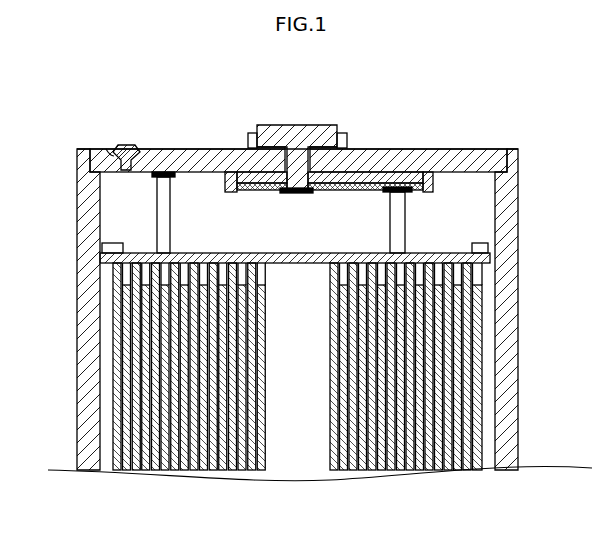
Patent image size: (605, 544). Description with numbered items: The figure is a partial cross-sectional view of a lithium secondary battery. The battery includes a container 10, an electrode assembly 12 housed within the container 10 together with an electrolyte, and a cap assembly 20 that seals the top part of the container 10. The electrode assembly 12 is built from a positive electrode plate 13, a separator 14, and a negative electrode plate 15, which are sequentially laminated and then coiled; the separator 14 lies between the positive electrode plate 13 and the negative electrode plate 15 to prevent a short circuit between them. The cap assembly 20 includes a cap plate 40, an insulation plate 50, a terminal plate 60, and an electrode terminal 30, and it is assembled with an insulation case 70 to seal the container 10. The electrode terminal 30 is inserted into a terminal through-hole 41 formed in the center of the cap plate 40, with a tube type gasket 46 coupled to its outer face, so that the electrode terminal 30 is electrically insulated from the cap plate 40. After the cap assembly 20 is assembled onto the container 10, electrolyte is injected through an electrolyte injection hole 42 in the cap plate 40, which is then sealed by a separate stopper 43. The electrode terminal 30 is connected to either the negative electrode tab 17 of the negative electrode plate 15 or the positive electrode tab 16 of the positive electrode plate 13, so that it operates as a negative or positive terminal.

The container 10 is at (512, 378).
The electrode assembly 12 is at (341, 393).
The positive electrode plate 13 is at (467, 470).
The separator 14 is at (483, 470).
The negative electrode plate 15 is at (448, 470).
The positive electrode tab 16 is at (160, 195).
The negative electrode tab 17 is at (400, 225).
The cap assembly 20 is at (403, 118).
The electrode terminal 30 is at (297, 125).
The cap plate 40 is at (448, 150).
The terminal through-hole 41 is at (250, 134).
The electrolyte injection hole 42 is at (112, 152).
The stopper 43 is at (126, 145).
The tube type gasket 46 is at (345, 135).
The insulation plate 50 is at (430, 197).
The terminal plate 60 is at (352, 192).
The insulation case 70 is at (125, 252).